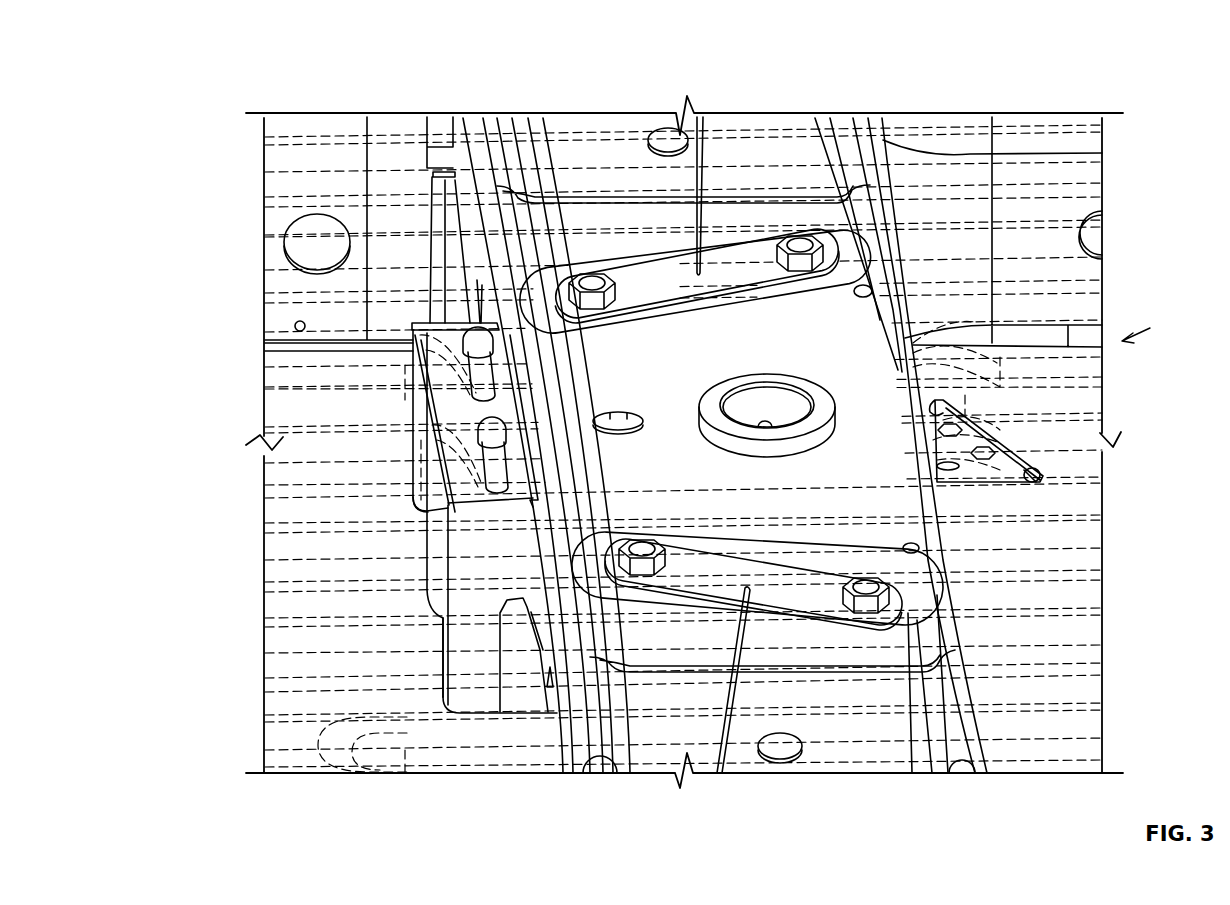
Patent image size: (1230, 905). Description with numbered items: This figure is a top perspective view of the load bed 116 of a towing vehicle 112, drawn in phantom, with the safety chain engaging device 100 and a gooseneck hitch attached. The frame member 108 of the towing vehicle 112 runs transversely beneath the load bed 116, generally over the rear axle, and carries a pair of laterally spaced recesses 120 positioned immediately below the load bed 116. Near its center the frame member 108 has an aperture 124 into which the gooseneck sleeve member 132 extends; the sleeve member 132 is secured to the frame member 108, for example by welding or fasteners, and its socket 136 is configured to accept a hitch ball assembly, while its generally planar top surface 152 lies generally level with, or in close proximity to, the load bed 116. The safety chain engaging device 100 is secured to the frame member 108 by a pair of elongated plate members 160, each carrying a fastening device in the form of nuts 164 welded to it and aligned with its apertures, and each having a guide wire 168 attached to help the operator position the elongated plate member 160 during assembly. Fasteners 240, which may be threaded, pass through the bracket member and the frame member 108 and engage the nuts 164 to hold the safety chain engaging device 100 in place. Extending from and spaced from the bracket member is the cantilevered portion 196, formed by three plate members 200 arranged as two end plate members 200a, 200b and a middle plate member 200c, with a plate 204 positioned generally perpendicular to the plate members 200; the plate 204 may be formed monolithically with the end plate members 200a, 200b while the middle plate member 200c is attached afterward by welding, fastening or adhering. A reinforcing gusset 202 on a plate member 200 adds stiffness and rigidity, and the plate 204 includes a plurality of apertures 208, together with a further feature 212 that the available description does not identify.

The safety chain engaging device 100 is at (1158, 329).
The frame member 108 is at (884, 312).
The towing vehicle 112 is at (1048, 120).
The load bed 116 is at (952, 130).
The recesses 120 is at (590, 275).
The aperture 124 is at (790, 452).
The gooseneck sleeve member 132 is at (714, 432).
The socket 136 is at (760, 393).
The top surface 152 is at (800, 385).
The elongated plate member 160 is at (647, 280).
The nuts 164 is at (540, 262).
The guide wire 168 is at (704, 140).
The cantilevered portion 196 is at (447, 472).
The plate member 200 is at (470, 700).
The end plate member 200a is at (447, 668).
The end plate member 200b is at (417, 417).
The middle plate member 200c is at (437, 545).
The reinforcing gusset 202 is at (518, 700).
The plate 204 is at (413, 363).
The apertures 208 is at (493, 387).
The pin head 212 is at (487, 323).
The fasteners 240 is at (568, 232).